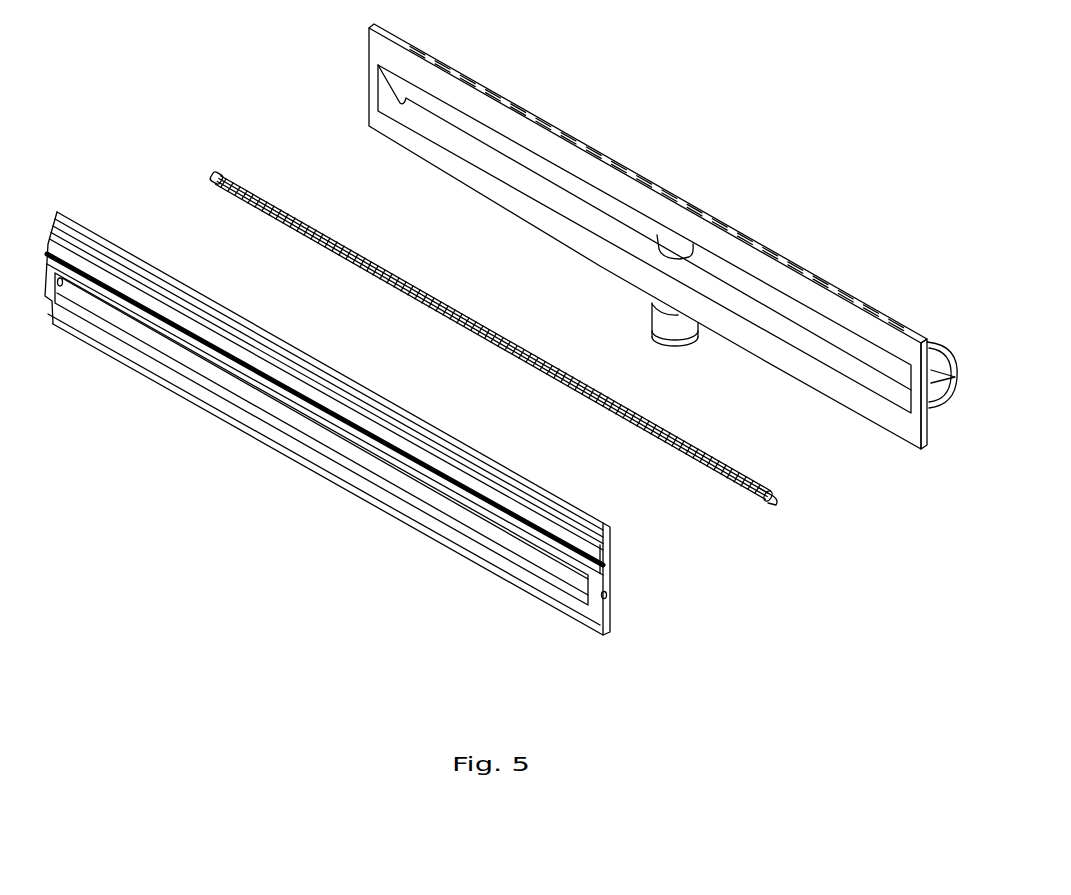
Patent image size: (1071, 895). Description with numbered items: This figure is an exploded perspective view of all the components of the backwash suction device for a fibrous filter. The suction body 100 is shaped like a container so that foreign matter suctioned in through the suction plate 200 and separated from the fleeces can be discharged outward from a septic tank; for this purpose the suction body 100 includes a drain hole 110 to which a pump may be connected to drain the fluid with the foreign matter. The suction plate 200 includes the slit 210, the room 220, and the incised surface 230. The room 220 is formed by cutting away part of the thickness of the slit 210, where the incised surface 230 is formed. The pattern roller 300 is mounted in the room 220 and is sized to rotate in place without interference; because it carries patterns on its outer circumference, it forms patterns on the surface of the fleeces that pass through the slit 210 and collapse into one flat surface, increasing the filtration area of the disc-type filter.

The suction body 100 is at (676, 215).
The drain hole 110 is at (690, 340).
The suction plate 200 is at (327, 429).
The slit 210 is at (340, 424).
The room 220 is at (224, 362).
The incised surface 230 is at (530, 553).
The pattern roller 300 is at (754, 510).